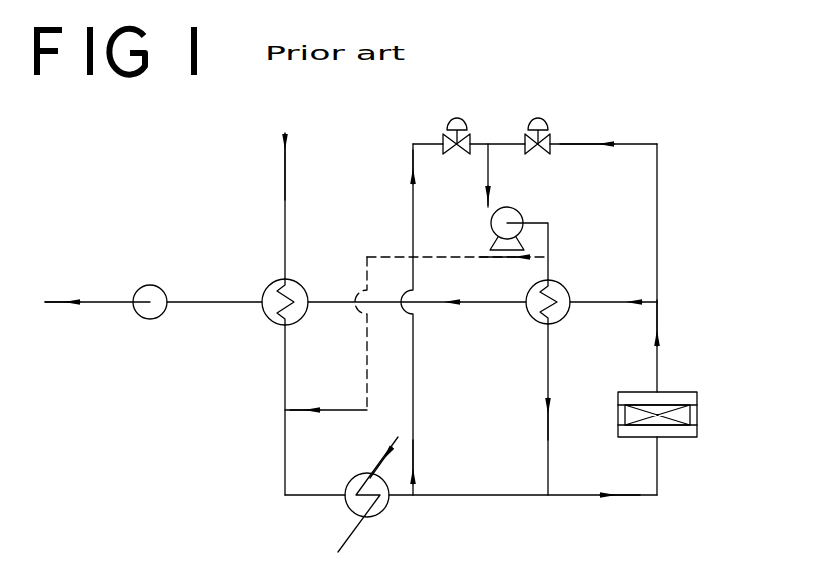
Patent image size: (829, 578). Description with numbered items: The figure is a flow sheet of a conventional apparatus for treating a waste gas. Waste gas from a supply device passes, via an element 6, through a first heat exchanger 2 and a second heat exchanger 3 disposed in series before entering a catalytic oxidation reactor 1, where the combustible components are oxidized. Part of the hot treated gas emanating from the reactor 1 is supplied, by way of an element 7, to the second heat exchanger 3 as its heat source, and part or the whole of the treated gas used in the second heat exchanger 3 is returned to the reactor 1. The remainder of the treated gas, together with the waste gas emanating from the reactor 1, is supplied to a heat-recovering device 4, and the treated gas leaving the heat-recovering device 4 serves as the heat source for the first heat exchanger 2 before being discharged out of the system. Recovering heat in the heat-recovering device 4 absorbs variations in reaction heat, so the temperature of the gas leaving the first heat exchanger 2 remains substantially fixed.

The catalytic oxidation reactor 1 is at (682, 394).
The first heat exchanger 2 is at (302, 283).
The second heat exchanger 3 is at (565, 284).
The heat-recovering device 4 is at (348, 512).
The flow meter 6 is at (148, 286).
The pump 7 is at (511, 208).